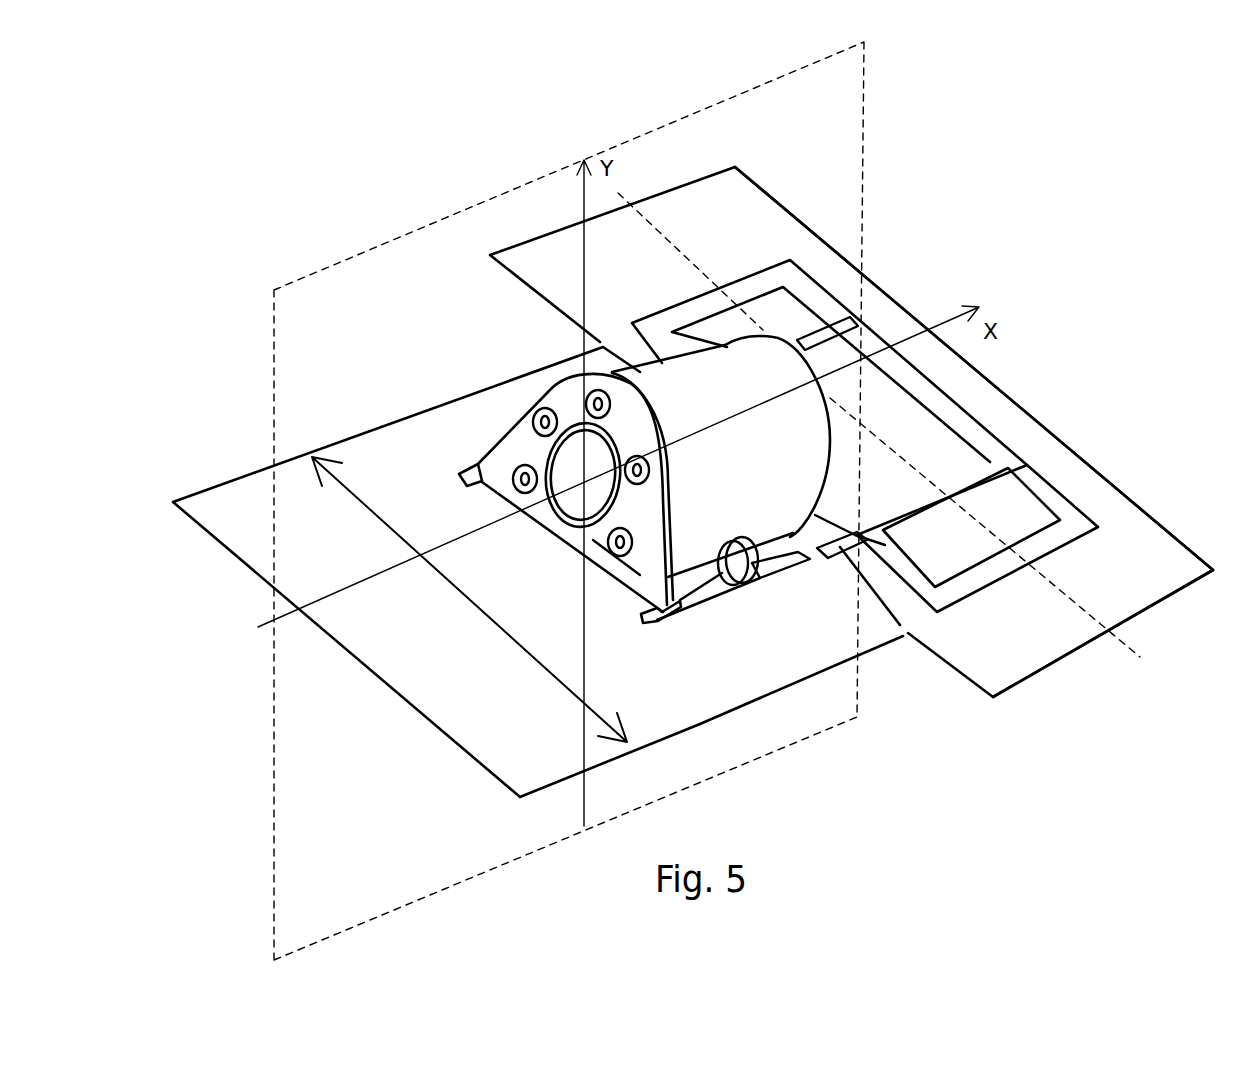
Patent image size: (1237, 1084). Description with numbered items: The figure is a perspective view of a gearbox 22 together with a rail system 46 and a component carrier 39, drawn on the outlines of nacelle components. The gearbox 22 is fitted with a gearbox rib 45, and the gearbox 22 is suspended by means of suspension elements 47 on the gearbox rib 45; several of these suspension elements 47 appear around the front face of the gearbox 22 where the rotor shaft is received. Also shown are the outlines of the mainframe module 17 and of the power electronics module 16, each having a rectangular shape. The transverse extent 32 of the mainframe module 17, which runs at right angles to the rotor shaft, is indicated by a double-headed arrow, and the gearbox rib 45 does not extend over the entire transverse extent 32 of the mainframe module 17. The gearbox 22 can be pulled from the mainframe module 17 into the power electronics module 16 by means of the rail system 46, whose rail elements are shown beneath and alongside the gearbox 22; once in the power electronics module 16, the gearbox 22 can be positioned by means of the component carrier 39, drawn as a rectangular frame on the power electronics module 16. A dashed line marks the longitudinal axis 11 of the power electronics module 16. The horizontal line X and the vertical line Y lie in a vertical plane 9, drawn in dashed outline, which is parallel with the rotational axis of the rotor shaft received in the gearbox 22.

The vertical plane 9 is at (830, 185).
The longitudinal axis 11 is at (1123, 643).
The power electronics module 16 is at (700, 230).
The mainframe module 17 is at (385, 607).
The gearbox 22 is at (680, 403).
The transverse extent 32 is at (457, 590).
The component carrier 39 is at (1000, 560).
The gearbox rib 45 is at (593, 540).
The rail system 46 is at (827, 343).
The suspension elements 47 is at (518, 466).